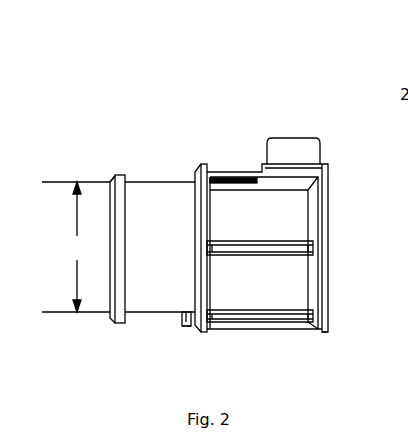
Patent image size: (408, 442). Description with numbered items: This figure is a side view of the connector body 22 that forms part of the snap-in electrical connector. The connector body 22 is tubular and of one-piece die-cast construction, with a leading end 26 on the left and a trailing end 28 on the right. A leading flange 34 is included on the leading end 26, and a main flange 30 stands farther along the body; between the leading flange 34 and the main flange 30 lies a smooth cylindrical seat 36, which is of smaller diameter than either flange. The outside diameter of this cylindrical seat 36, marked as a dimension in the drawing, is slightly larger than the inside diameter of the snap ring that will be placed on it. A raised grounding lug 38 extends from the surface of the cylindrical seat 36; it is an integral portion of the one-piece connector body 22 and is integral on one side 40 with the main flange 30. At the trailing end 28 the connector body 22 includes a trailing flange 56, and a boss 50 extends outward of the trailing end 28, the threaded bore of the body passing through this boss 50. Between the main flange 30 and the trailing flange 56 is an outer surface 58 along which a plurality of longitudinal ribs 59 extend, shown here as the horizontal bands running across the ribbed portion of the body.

The connector body 22 is at (95, 91).
The leading end 26 is at (112, 210).
The trailing end 28 is at (328, 230).
The main flange 30 is at (197, 335).
The leading flange 34 is at (118, 176).
The cylindrical seat 36 is at (170, 285).
The raised grounding lug 38 is at (183, 325).
The side 40 is at (190, 333).
The boss 50 is at (303, 163).
The trailing flange 56 is at (323, 333).
The outer surface 58 is at (266, 224).
The longitudinal ribs 59 is at (258, 252).